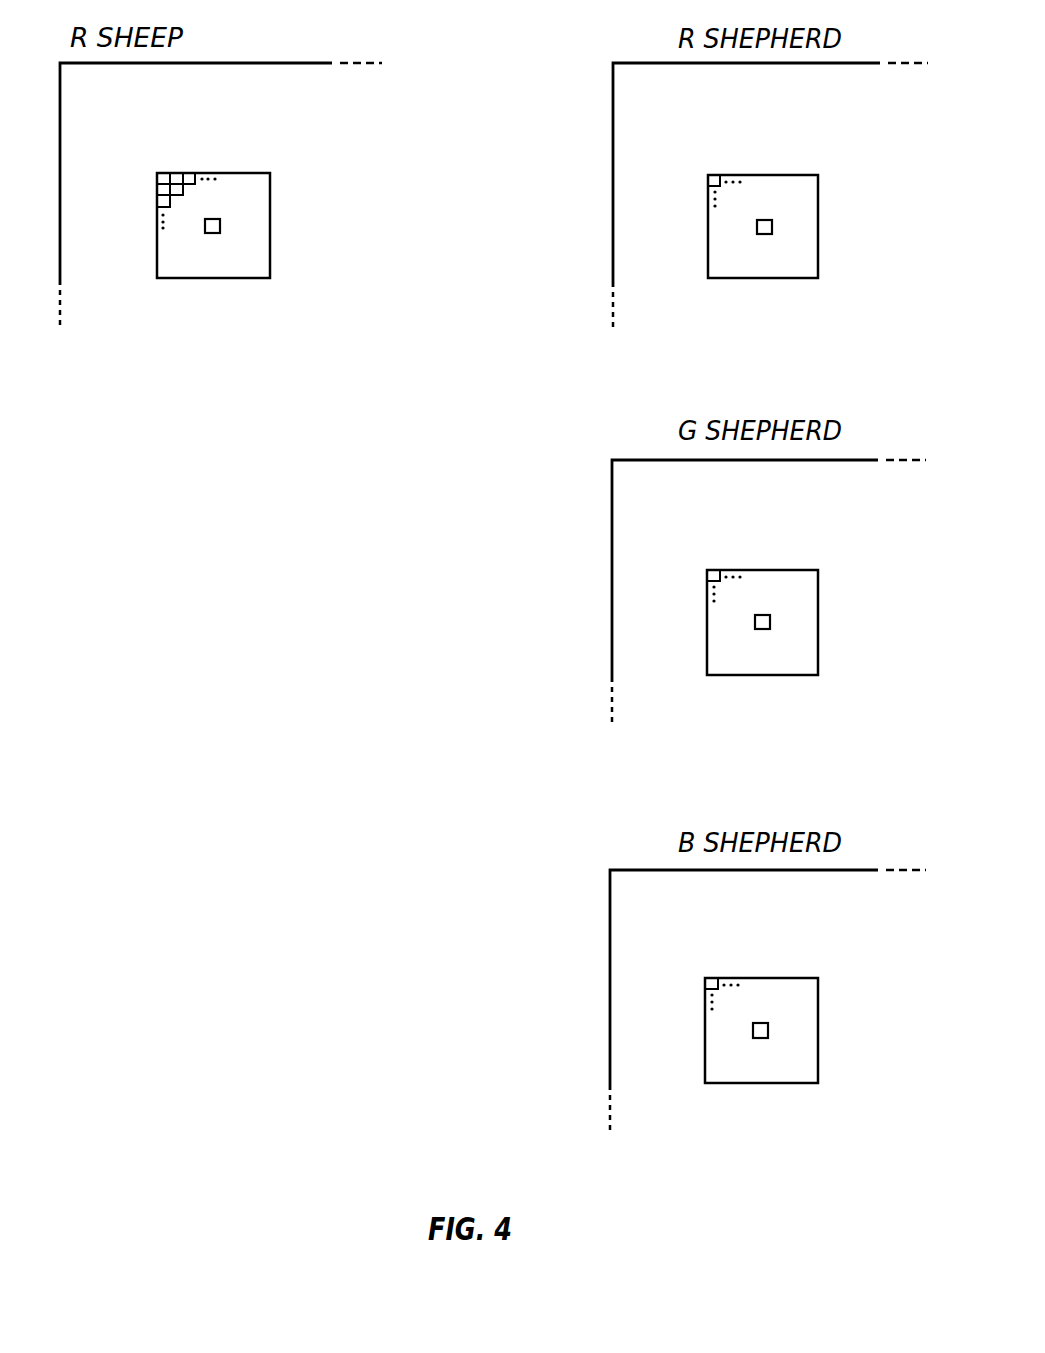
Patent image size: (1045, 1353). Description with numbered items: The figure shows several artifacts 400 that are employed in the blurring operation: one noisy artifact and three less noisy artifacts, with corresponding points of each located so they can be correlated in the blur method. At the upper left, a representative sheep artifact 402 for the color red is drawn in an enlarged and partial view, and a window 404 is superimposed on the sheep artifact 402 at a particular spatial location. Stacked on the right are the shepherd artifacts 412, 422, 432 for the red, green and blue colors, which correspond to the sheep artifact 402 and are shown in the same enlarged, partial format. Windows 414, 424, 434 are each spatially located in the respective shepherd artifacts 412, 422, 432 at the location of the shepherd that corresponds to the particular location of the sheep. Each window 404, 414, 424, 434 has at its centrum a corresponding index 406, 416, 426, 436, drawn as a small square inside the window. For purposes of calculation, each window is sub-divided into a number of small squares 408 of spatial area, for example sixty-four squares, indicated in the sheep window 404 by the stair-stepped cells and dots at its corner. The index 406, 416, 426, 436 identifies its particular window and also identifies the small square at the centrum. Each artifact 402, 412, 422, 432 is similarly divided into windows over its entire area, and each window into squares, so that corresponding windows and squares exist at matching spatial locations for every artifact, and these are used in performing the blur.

The artifacts 400 is at (232, 575).
The sheep artifact 402 is at (221, 176).
The window 404 is at (172, 225).
The index 406 is at (171, 273).
The squares 408 is at (174, 174).
The shepherd artifact 412 is at (730, 196).
The window 414 is at (724, 226).
The index 416 is at (724, 274).
The shepherd artifact 422 is at (729, 592).
The window 424 is at (724, 622).
The index 426 is at (723, 669).
The shepherd artifact 432 is at (729, 1002).
The window 434 is at (723, 1030).
The index 436 is at (722, 1078).